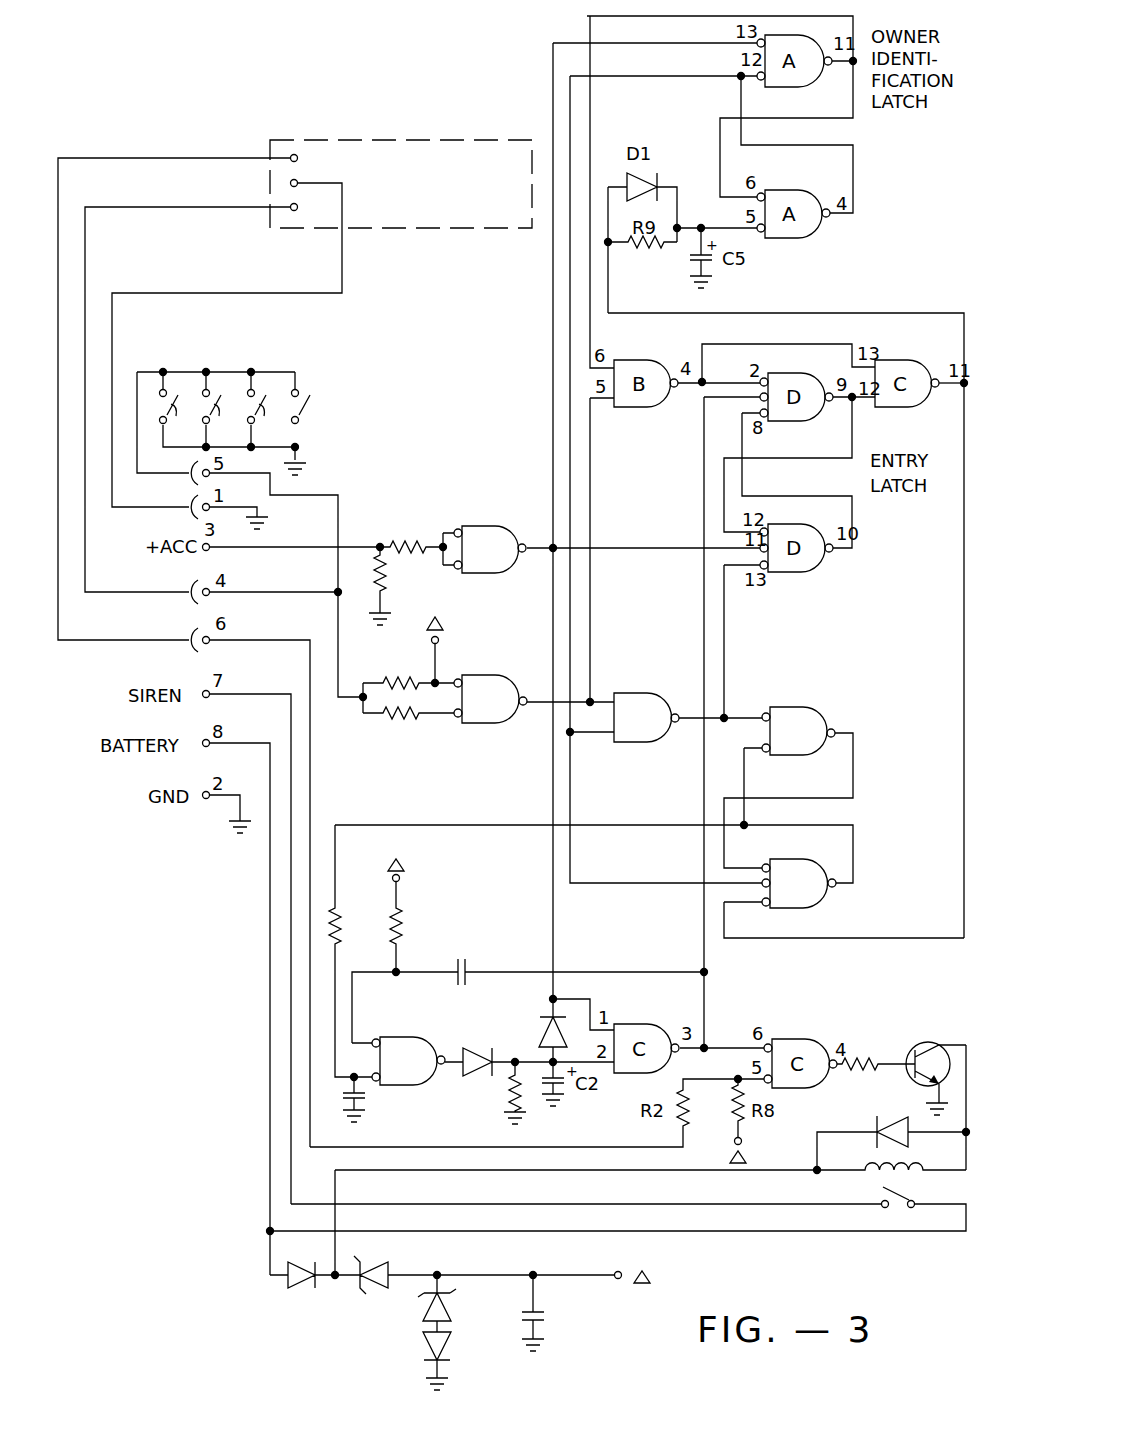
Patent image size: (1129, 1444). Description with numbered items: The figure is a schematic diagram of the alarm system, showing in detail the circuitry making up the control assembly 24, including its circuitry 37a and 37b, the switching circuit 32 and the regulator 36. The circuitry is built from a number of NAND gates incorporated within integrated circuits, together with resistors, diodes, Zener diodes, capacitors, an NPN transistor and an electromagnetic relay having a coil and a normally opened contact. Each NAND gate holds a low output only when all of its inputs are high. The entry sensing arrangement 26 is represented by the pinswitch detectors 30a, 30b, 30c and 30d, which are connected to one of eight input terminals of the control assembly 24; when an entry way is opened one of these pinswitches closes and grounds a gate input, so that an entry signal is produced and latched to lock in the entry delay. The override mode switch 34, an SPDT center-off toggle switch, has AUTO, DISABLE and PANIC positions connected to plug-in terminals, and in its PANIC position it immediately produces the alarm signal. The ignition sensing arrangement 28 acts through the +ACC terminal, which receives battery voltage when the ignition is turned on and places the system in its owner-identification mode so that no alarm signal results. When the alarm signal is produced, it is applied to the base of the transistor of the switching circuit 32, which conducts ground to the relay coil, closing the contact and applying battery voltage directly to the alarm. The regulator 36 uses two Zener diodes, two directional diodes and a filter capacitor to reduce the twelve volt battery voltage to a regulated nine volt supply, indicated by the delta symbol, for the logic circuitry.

The control assembly 24 is at (243, 1050).
The entry sensing arrangement 26 is at (440, 744).
The ignition sensing arrangement 28 is at (519, 586).
The pinswitch detector 30a is at (180, 407).
The pinswitch detector 30b is at (223, 407).
The pinswitch detector 30c is at (268, 407).
The pinswitch detector 30d is at (310, 418).
The switching circuit 32 is at (937, 1007).
The override mode switch 34 is at (390, 140).
The regulator 36 is at (266, 1331).
The circuitry 37a is at (857, 687).
The circuitry 37b is at (460, 1108).